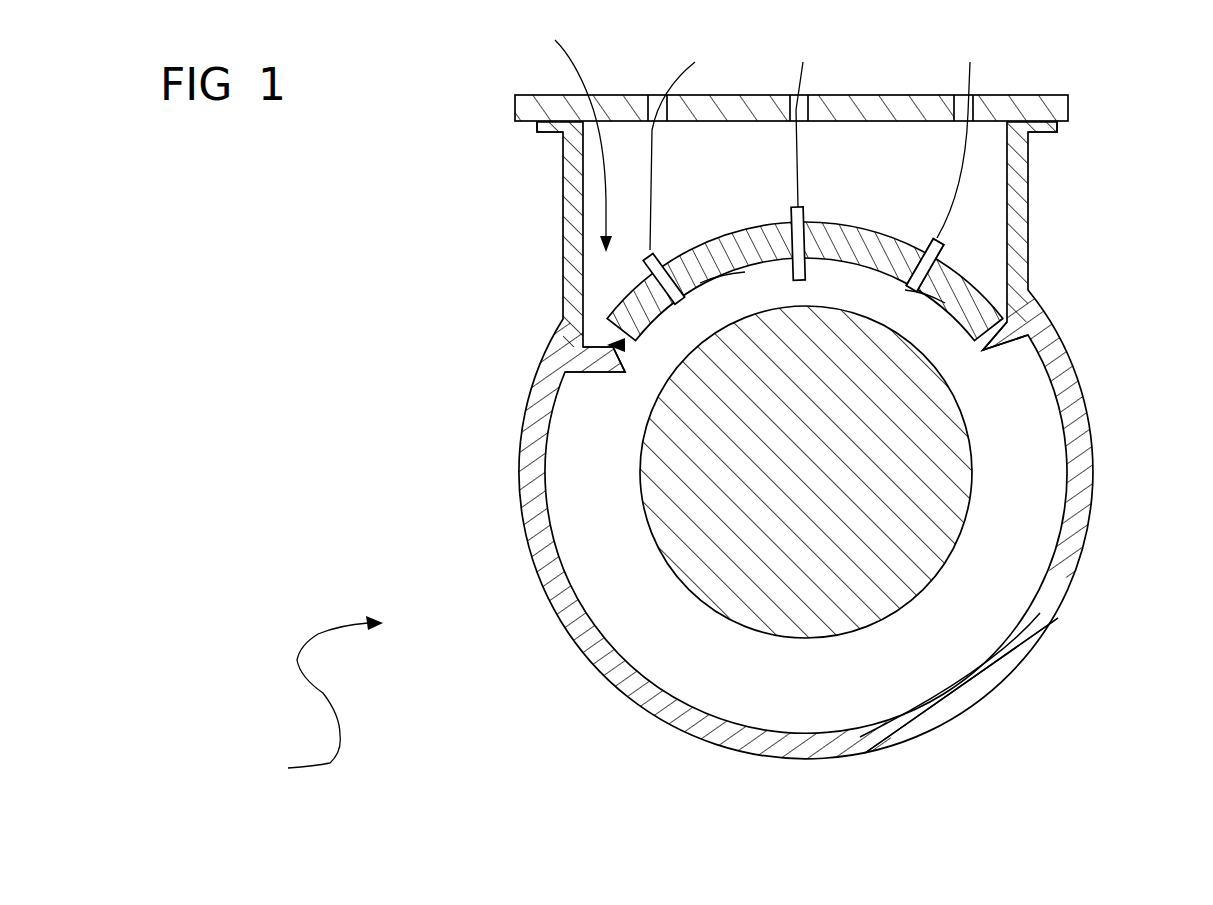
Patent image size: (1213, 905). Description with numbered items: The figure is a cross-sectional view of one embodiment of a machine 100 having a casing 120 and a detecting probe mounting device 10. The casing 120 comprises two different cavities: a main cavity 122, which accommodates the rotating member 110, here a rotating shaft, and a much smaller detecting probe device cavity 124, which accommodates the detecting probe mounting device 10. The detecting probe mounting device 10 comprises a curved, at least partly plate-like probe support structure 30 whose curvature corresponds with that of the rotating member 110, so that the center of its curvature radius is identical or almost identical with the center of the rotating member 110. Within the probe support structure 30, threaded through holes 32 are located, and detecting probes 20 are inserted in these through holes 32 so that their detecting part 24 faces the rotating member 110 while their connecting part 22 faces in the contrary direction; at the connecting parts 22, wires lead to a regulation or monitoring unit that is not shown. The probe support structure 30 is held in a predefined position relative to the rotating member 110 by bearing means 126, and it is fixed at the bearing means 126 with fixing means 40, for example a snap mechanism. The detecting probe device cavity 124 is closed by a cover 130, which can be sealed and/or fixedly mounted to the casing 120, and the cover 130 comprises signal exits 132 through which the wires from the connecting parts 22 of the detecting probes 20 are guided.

The detecting probe mounting device 10 is at (565, 130).
The detecting probes 20 is at (820, 183).
The connecting part 22 is at (655, 262).
The detecting part 24 is at (818, 270).
The probe support structure 30 is at (950, 268).
The threaded through holes 32 is at (705, 290).
The fixing means 40 is at (625, 345).
The machine 100 is at (305, 701).
The rotating member 110 is at (858, 598).
The casing 120 is at (1030, 623).
The main cavity 122 is at (1037, 455).
The detecting probe device cavity 124 is at (791, 80).
The bearing means 126 is at (592, 376).
The cover 130 is at (1040, 99).
The signal exits 132 is at (792, 112).